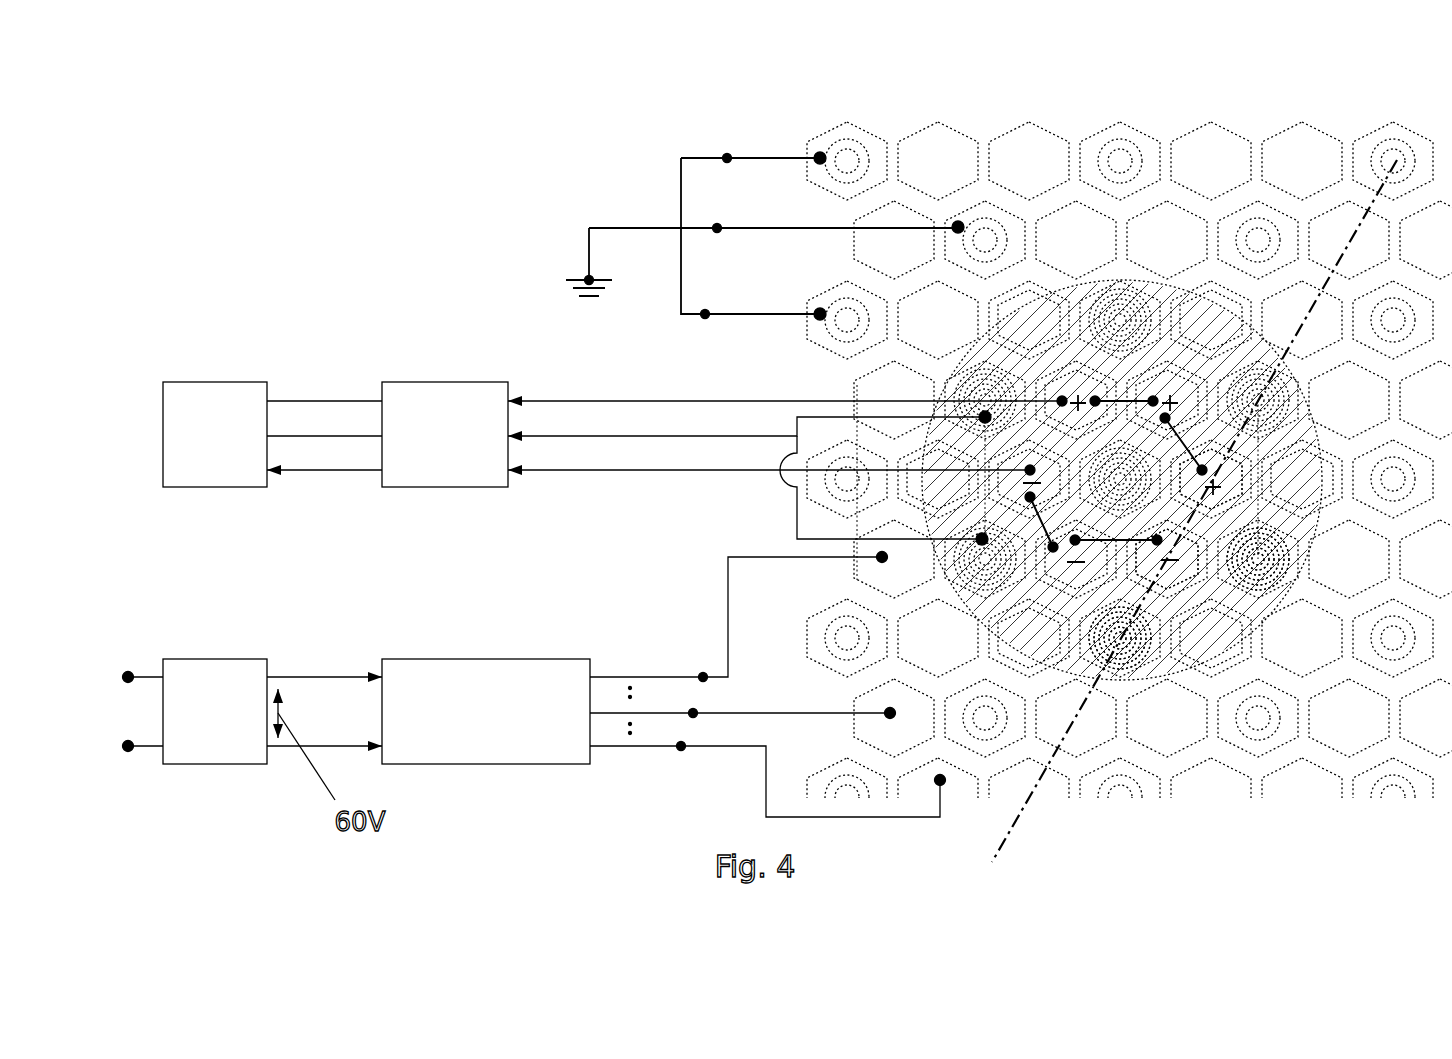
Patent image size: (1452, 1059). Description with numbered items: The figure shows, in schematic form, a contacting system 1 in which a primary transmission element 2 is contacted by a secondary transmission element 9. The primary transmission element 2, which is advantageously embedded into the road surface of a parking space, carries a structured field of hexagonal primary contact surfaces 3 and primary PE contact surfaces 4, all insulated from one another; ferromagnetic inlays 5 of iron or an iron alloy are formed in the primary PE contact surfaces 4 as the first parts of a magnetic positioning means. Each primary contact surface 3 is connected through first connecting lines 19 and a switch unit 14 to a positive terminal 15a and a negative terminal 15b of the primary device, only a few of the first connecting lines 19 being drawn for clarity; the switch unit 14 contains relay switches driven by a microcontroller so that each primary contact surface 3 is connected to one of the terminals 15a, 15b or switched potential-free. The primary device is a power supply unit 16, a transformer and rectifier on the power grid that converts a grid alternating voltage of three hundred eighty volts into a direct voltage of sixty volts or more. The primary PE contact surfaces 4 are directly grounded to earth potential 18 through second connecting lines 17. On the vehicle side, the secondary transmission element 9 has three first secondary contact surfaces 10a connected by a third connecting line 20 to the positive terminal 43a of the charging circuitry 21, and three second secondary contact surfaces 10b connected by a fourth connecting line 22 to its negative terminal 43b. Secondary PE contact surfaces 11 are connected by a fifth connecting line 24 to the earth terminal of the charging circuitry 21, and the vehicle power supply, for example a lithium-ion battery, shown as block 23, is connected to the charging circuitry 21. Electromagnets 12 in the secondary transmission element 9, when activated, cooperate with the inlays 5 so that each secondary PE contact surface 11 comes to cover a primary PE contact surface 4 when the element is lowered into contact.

The contacting system 1 is at (428, 125).
The primary transmission element 2 is at (800, 122).
The primary contact surfaces 3 is at (1290, 777).
The primary PE contact surfaces 4 is at (1260, 273).
The ferromagnetic inlays 5 is at (855, 315).
The secondary transmission element 9 is at (1041, 443).
The first secondary contact surfaces 10a is at (1233, 481).
The second secondary contact surfaces 10b is at (1187, 568).
The secondary PE contact surfaces 11 is at (1258, 401).
The electromagnets 12 is at (1268, 573).
The switch unit 14 is at (451, 695).
The positive terminal 15a is at (305, 677).
The negative terminal 15b is at (340, 746).
The power supply unit 16 is at (203, 695).
The second connecting lines 17 is at (705, 314).
The earth potential 18 is at (589, 280).
The first connecting lines 19 is at (681, 746).
The third connecting line 20 is at (655, 401).
The charging circuitry 21 is at (450, 401).
The fourth connecting line 22 is at (640, 470).
The power supply of the vehicle 23 is at (218, 401).
The fifth connecting line 24 is at (703, 436).
The positive terminal 43a is at (490, 392).
The negative terminal 43b is at (478, 483).